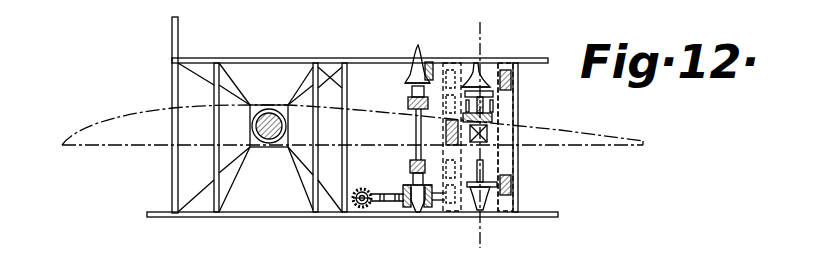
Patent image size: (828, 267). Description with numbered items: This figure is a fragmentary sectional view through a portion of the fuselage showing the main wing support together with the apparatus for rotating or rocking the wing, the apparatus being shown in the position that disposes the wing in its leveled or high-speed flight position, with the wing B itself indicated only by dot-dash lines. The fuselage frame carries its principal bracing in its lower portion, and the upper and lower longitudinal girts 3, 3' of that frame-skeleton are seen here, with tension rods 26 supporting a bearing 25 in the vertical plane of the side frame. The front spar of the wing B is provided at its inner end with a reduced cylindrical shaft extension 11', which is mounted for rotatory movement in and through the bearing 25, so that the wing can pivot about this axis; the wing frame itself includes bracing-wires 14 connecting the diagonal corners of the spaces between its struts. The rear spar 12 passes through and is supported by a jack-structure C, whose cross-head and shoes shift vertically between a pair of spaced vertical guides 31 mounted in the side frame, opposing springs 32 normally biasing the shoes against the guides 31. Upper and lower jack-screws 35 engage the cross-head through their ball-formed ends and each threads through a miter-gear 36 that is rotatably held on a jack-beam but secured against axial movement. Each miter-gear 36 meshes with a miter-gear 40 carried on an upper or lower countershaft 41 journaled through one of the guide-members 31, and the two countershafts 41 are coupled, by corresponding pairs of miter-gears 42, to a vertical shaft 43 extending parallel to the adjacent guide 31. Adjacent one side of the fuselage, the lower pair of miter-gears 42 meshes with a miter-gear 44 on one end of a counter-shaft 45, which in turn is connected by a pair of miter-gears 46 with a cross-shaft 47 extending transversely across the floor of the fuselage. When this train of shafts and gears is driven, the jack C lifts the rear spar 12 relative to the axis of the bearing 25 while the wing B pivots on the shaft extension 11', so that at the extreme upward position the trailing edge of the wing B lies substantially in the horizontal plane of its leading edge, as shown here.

The upper longitudinal girt 3 is at (360, 115).
The lower longitudinal girt 3' is at (352, 229).
The shaft extension of front spar 11' is at (273, 88).
The rear spar 12 is at (490, 135).
The bracing-wires 14 is at (483, 30).
The bearing 25 is at (253, 104).
The rods 26 is at (291, 104).
The vertical guides 31 is at (443, 130).
The springs 32 is at (495, 140).
The jack-screws 35 is at (478, 62).
The miter-gear 36 is at (490, 88).
The miter-gears 40 is at (470, 68).
The countershafts 41 is at (432, 64).
The miter-gears 42 is at (414, 57).
The vertical shaft 43 is at (416, 150).
The miter-gear 44 is at (404, 205).
The counter-shaft 45 is at (385, 206).
The miter-gears 46 is at (363, 190).
The cross-shaft 47 is at (356, 206).
The main wing-structure B is at (105, 148).
The jack-structure C is at (520, 165).